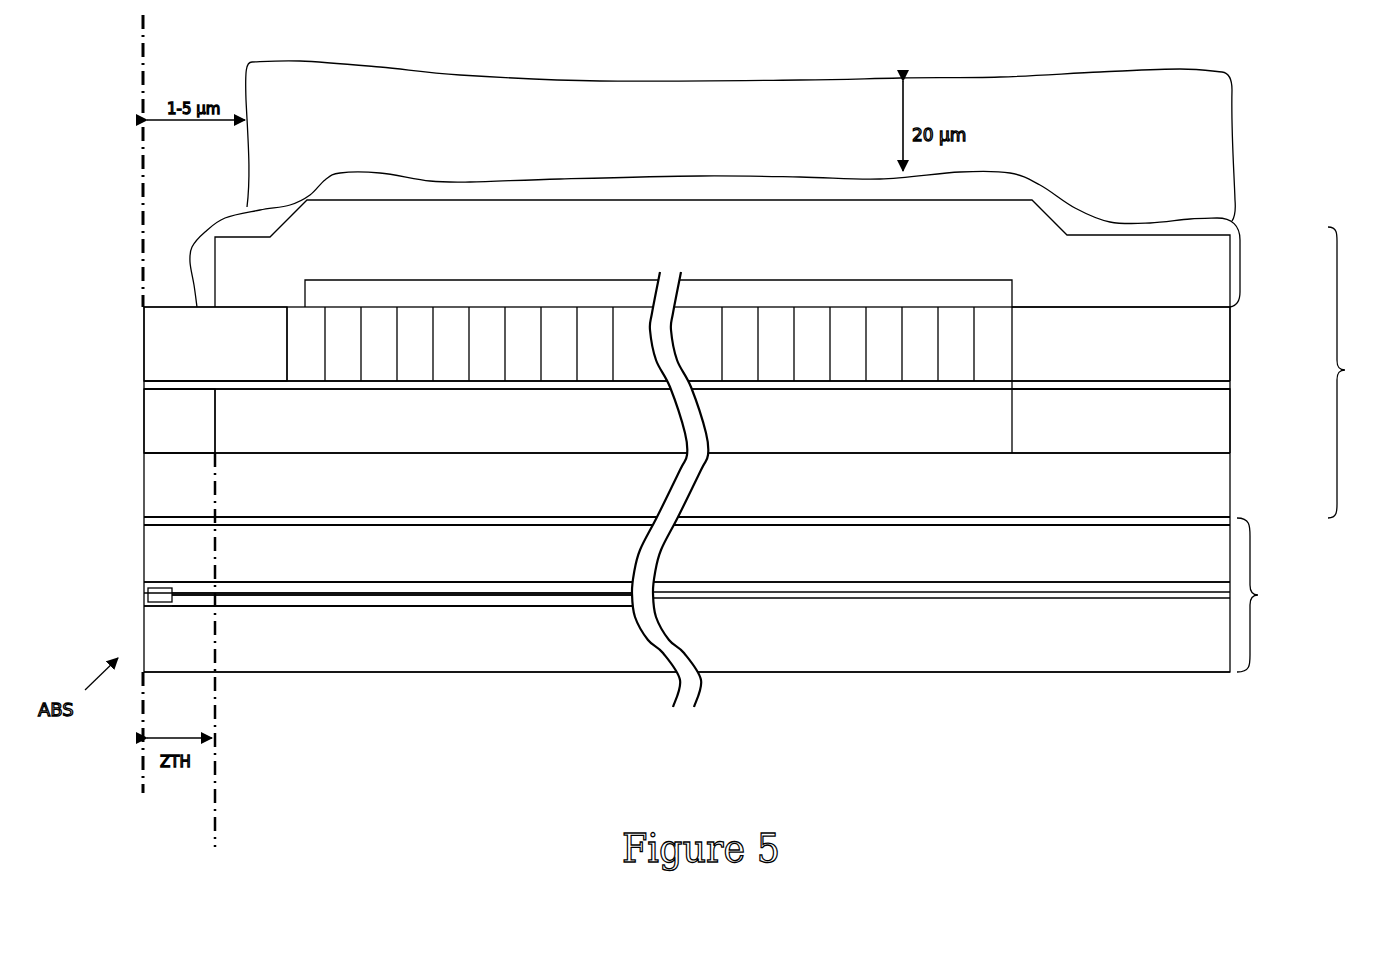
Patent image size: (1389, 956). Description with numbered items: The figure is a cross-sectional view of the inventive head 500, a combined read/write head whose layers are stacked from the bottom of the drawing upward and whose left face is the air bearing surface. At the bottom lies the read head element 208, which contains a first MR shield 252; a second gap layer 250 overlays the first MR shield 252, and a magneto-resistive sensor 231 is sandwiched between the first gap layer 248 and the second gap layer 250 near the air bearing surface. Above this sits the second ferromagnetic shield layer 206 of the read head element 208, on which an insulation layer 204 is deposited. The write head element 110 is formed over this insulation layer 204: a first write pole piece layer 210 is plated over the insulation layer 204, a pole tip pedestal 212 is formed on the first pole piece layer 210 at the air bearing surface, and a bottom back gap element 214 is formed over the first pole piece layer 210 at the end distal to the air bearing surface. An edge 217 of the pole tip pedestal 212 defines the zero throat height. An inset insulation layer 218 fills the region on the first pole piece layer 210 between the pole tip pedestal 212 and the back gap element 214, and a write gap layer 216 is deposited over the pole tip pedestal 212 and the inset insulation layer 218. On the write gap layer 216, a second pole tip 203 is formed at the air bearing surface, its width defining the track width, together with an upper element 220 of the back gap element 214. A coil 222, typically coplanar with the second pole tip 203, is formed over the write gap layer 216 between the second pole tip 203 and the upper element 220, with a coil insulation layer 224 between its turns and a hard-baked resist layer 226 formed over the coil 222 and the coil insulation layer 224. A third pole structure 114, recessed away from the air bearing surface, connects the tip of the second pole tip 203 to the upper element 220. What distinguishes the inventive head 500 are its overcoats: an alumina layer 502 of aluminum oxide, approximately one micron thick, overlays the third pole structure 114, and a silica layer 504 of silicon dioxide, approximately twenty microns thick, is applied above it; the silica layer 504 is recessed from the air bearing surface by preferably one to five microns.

The write head element 110 is at (1355, 372).
The pole (P3) structure 114 is at (722, 253).
The second pole tip (P2) 203 is at (143, 350).
The insulation layer 204 is at (143, 523).
The second ferromagnetic shield layer (S2) 206 is at (143, 553).
The read head element 208 is at (1266, 595).
The first write pole piece (P1) layer 210 is at (143, 495).
The pole tip pedestal (PTP) 212 is at (143, 430).
The bottom back gap (BG) element 214 is at (1231, 428).
The write gap layer 216 is at (143, 388).
The edge of PTP 217 is at (215, 428).
The inset insulation layer 218 is at (935, 443).
The upper element of BG element 220 is at (1231, 343).
The coil 222 is at (403, 327).
The coil insulation layer 224 is at (452, 318).
The hard-baked resist layer 226 is at (835, 280).
The magneto-resistive (MR) sensor 231 is at (146, 597).
The first gap layer 248 is at (345, 583).
The second gap layer 250 is at (490, 600).
The first MR shield S1 252 is at (143, 643).
The inventive head 500 is at (1105, 727).
The alumina layer 502 is at (1232, 268).
The silica layer 504 is at (1208, 118).